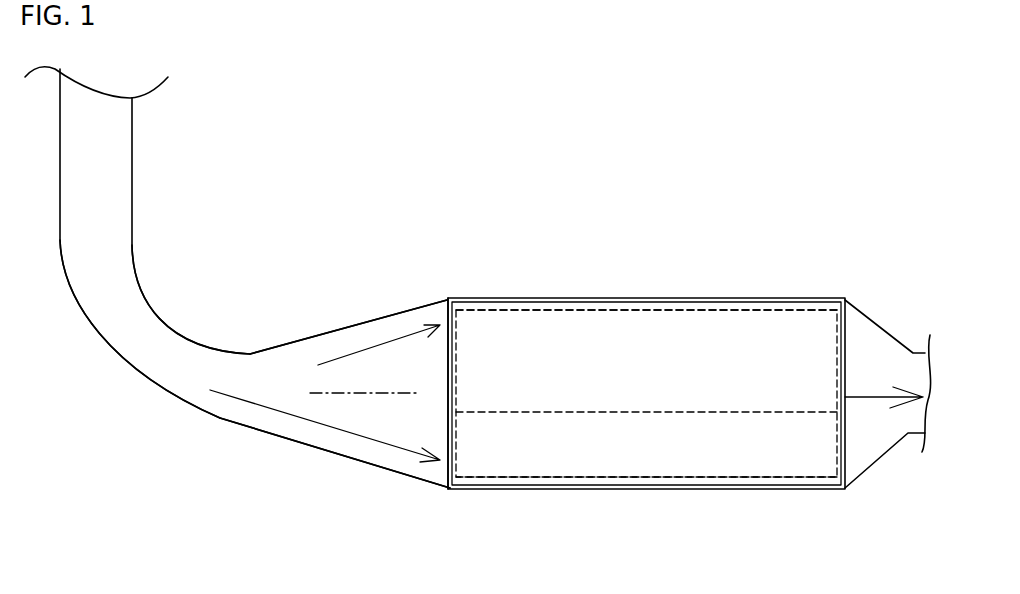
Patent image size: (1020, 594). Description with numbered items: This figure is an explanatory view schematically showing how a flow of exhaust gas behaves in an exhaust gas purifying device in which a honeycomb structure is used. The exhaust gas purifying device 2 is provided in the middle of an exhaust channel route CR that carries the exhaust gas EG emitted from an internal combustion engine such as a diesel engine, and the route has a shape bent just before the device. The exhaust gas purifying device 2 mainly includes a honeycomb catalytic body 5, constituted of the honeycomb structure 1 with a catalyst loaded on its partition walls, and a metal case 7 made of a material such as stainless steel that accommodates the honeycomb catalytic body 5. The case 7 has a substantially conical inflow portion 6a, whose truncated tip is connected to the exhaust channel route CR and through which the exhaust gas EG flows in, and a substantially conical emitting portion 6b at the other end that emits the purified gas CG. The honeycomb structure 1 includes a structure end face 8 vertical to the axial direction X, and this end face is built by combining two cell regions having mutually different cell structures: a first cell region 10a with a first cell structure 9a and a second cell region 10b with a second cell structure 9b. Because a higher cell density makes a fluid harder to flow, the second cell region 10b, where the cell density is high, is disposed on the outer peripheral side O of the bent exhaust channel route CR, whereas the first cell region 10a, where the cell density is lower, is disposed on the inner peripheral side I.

The honeycomb structure 1 is at (557, 323).
The honeycomb catalytic body 5 is at (646, 354).
The exhaust gas purifying device 2 is at (575, 370).
The inflow portion 6a is at (428, 476).
The emitting portion 6b is at (870, 455).
The case 7 is at (687, 490).
The structure end face 8 is at (450, 296).
The first cell structure 9a is at (646, 326).
The second cell structure 9b is at (646, 509).
The first cell region 10a is at (758, 333).
The second cell region 10b is at (592, 460).
The exhaust channel route CR is at (203, 187).
The inner peripheral side I is at (228, 297).
The outer peripheral side O is at (125, 388).
The axial direction X is at (356, 400).
The exhaust gas EG is at (372, 345).
The purified gas CG is at (887, 392).